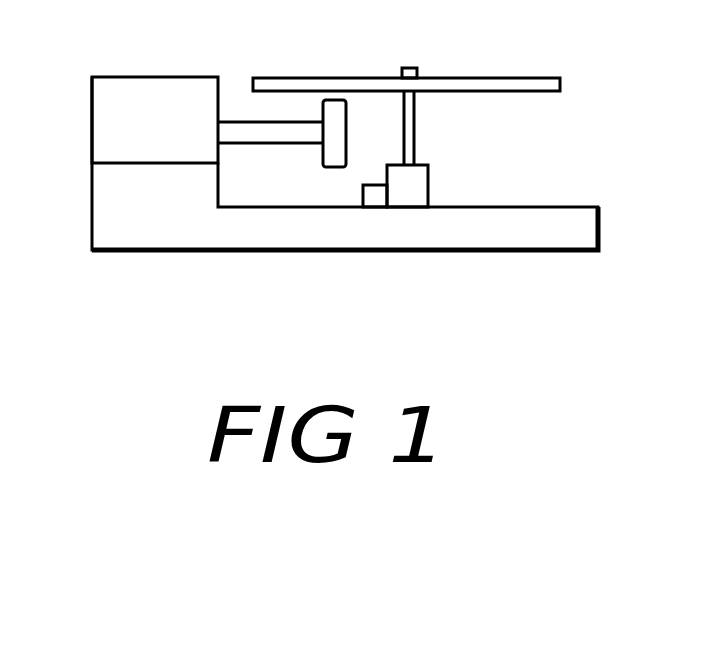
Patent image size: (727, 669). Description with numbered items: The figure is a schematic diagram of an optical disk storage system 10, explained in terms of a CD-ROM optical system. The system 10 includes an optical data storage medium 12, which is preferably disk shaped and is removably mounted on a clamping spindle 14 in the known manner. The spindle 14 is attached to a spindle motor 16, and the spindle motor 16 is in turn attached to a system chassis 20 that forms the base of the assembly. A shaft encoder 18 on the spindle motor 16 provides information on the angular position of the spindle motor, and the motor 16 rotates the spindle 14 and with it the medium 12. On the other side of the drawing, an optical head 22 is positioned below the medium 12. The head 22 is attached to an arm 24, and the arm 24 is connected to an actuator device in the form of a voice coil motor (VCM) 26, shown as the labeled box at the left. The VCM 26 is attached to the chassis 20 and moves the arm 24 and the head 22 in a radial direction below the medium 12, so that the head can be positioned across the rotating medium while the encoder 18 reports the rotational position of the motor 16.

The optical disk storage system 10 is at (162, 283).
The optical data storage medium 12 is at (531, 78).
The clamping spindle 14 is at (414, 115).
The spindle motor 16 is at (422, 186).
The shaft encoder 18 is at (363, 200).
The system chassis 20 is at (548, 252).
The optical head 22 is at (334, 110).
The arm 24 is at (228, 124).
The voice coil motor (VCM) 26 is at (108, 88).